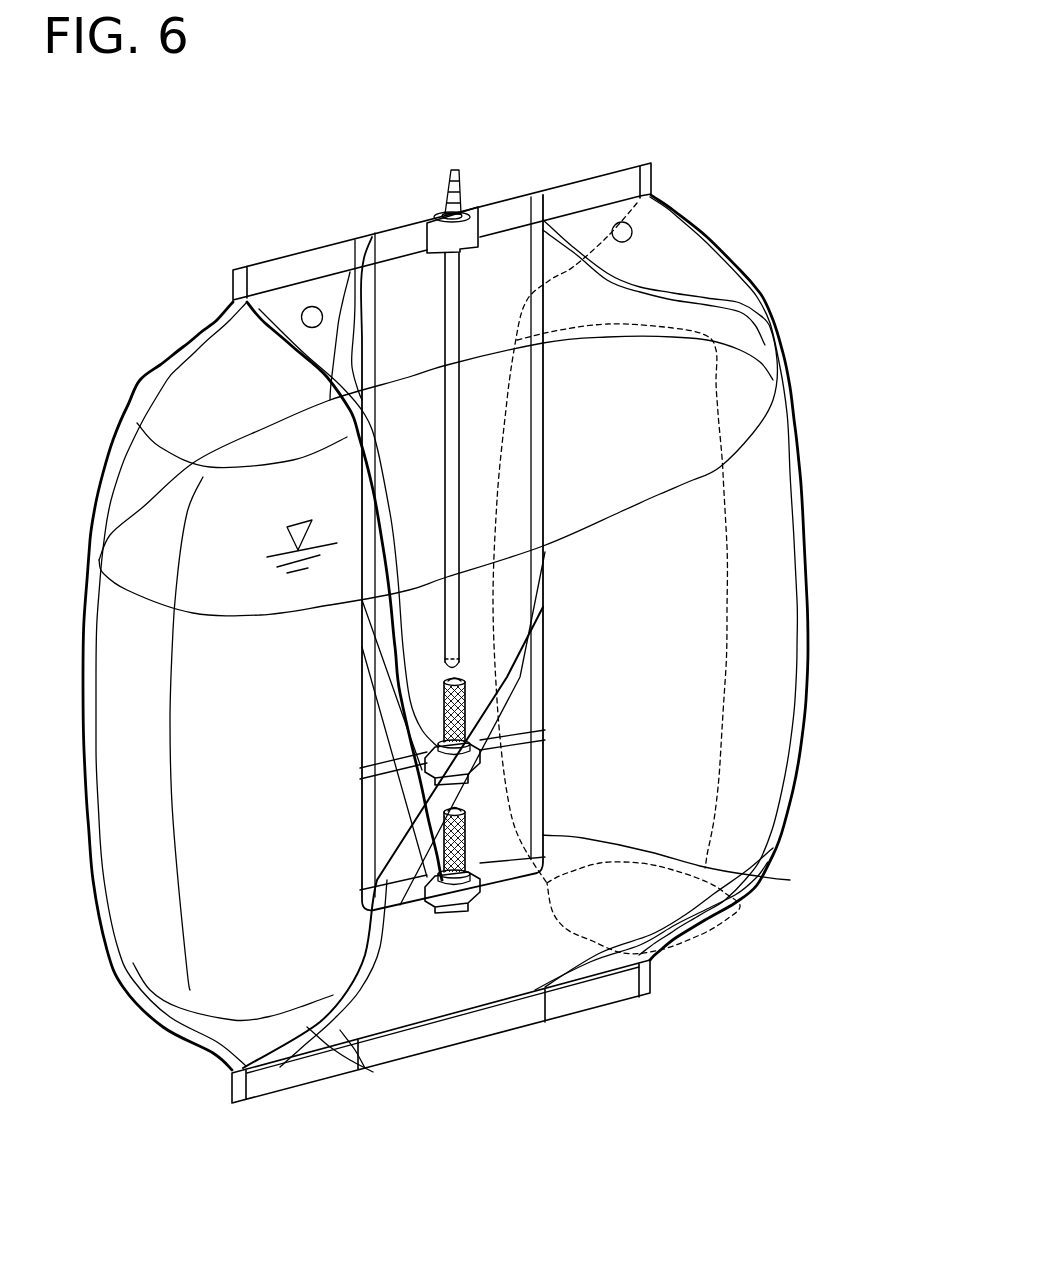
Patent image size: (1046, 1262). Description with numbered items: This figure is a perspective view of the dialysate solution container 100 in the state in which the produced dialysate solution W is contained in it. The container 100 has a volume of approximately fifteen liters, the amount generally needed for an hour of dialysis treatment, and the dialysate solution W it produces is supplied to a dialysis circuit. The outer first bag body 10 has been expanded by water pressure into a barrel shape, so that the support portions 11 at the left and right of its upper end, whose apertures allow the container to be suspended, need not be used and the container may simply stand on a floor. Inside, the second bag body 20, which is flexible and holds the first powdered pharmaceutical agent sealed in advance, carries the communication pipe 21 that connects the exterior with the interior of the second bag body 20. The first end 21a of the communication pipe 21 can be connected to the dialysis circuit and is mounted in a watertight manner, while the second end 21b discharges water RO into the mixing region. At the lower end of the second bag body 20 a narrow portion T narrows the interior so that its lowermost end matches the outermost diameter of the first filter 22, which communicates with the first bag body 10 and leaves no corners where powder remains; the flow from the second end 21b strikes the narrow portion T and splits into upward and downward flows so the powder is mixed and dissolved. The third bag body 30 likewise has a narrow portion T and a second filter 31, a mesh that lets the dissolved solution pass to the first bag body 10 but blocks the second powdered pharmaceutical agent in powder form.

The dialysate solution container 100 is at (158, 190).
The first bag body 10 is at (805, 627).
The support portion 11 is at (312, 307).
The second bag body 20 is at (543, 318).
The communication pipe 21 is at (453, 280).
The first end 21a is at (457, 167).
The second end 21b is at (445, 667).
The first filter 22 is at (460, 710).
The third bag body 30 is at (790, 880).
The second filter 31 is at (460, 837).
The narrow portion T is at (543, 727).
The dialysate solution W is at (680, 390).